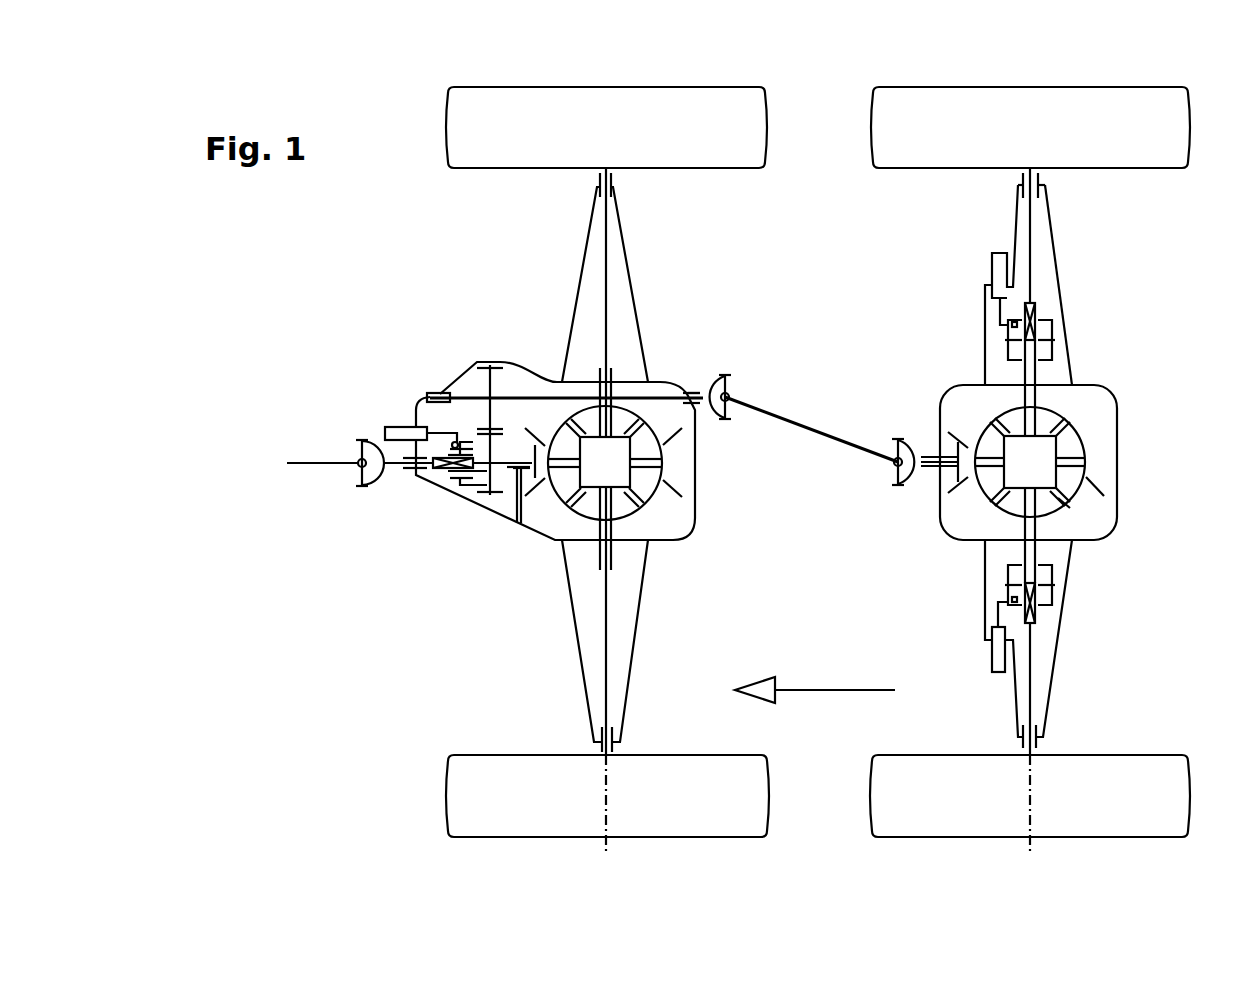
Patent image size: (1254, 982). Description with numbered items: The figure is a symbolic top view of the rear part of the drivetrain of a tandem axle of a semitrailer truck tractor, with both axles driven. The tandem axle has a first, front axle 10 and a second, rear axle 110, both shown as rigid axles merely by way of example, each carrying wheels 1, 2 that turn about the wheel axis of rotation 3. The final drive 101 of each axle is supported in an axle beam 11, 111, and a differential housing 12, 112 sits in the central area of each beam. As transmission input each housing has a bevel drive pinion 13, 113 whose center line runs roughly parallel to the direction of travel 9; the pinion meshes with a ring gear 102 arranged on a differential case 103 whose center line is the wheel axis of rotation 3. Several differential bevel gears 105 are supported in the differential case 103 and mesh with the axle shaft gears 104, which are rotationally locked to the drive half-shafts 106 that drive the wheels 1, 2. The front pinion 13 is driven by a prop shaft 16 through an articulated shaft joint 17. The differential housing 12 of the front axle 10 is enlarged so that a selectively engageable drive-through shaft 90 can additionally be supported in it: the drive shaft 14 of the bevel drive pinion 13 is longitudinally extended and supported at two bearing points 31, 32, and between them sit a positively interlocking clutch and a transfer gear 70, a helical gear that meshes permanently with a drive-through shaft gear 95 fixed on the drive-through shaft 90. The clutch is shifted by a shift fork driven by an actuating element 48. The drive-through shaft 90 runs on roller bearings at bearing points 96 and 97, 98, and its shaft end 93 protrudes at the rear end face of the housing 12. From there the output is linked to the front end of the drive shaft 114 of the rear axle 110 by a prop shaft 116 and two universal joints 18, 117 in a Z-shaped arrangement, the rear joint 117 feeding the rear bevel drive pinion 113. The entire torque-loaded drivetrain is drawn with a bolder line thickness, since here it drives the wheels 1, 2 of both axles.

The wheel 1 is at (665, 800).
The wheel 2 is at (1077, 798).
The wheel axis of rotation 3 is at (607, 778).
The direction of travel 9 is at (805, 700).
The front axle 10 is at (575, 722).
The axle beam 11 is at (572, 265).
The differential housing 12 is at (680, 533).
The bevel drive pinion 13 is at (491, 575).
The drive shaft 14 is at (393, 462).
The prop shaft 16 is at (310, 462).
The articulated shaft joint 17 is at (357, 455).
The universal joint 18 is at (731, 404).
The bearing point 31 is at (418, 475).
The bearing point 32 is at (489, 543).
The actuating element 48 is at (400, 433).
The transfer gear 70 is at (469, 558).
The drive-through shaft 90 is at (557, 397).
The shaft end 93 is at (765, 358).
The drive-through shaft gear 95 is at (480, 362).
The bearing point 96 is at (442, 393).
The bearing point 97 is at (760, 320).
The bearing point 98 is at (758, 329).
The final drive 101 is at (1073, 415).
The ring gear 102 is at (1100, 490).
The differential case 103 is at (1080, 457).
The axle shaft gear 104 is at (1133, 514).
The differential bevel gear 105 is at (1053, 448).
The drive half-shaft 106 is at (1032, 262).
The rear axle 110 is at (988, 702).
The axle beam 111 is at (1072, 322).
The differential housing 112 is at (1093, 533).
The bevel drive pinion 113 is at (947, 478).
The drive shaft 114 is at (935, 467).
The prop shaft 116 is at (787, 417).
The universal joint 117 is at (898, 472).